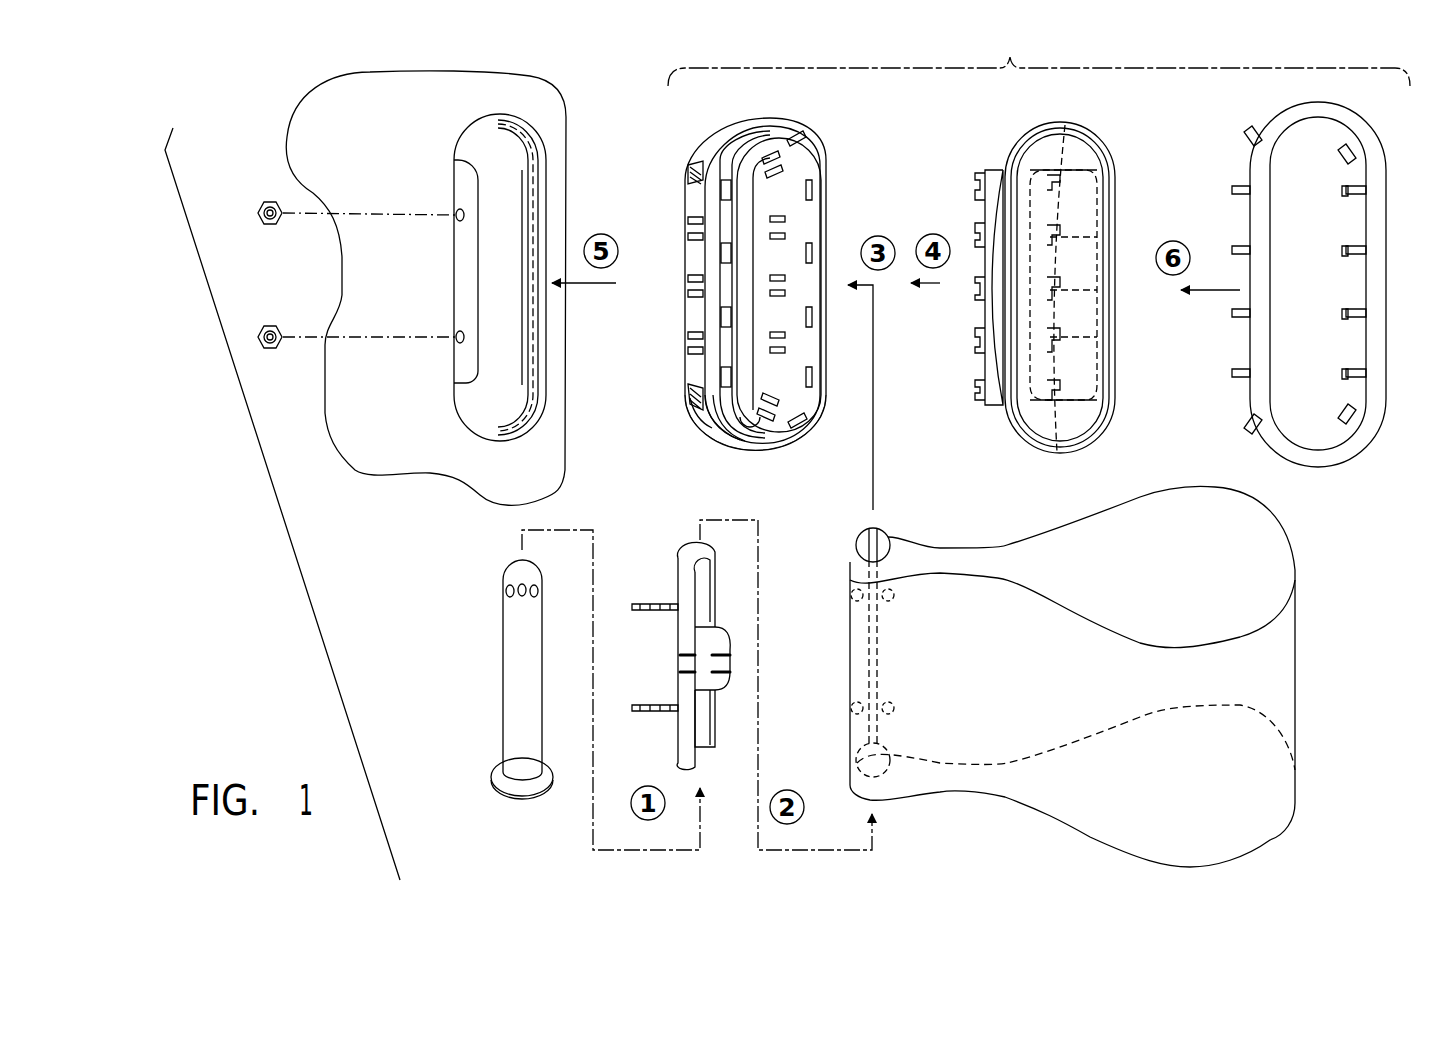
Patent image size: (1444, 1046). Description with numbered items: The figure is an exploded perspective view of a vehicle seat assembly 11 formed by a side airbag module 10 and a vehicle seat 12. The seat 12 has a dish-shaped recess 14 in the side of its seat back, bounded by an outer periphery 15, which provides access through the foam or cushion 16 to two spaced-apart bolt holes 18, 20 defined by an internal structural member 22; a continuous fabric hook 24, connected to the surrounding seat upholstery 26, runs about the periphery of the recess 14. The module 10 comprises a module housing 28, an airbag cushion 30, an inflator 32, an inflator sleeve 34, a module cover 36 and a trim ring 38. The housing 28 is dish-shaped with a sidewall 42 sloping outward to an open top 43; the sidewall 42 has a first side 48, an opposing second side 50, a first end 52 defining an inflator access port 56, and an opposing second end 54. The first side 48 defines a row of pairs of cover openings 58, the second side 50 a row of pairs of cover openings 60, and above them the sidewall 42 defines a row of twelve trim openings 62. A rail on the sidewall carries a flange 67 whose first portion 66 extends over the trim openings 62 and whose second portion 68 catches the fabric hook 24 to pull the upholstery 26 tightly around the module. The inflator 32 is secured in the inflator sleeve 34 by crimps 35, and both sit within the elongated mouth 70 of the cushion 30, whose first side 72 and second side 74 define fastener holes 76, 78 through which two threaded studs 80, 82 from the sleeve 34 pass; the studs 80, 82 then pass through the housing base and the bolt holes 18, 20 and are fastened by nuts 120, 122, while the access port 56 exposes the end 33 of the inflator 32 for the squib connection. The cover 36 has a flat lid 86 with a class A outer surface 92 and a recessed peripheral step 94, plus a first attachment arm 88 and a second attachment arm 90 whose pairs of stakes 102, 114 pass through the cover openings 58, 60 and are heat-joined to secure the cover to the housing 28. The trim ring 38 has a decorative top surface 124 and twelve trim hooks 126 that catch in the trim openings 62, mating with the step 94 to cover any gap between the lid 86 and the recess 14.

The side airbag module 10 is at (1039, 55).
The vehicle seat assembly 11 is at (288, 538).
The vehicle seat 12 is at (502, 72).
The dish-shaped recess 14 is at (538, 138).
The outer periphery of the recess 15 is at (545, 167).
The foam or cushion 16 is at (497, 140).
The bolt hole 18 is at (456, 220).
The bolt hole 20 is at (456, 340).
The internal structural member 22 is at (458, 378).
The fabric hook 24 is at (523, 346).
The seat upholstery 26 is at (542, 368).
The module housing 28 is at (826, 124).
The airbag cushion 30 is at (1010, 535).
The inflator 32 is at (499, 638).
The end of the inflator 33 is at (523, 794).
The inflator sleeve 34 is at (673, 585).
The crimps 35 is at (727, 653).
The module cover 36 is at (1122, 424).
The trim ring 38 is at (1381, 414).
The sidewall 42 is at (829, 143).
The open top 43 is at (818, 433).
The first side of the sidewall 48 is at (705, 313).
The second side of the sidewall 50 is at (827, 307).
The first end of the sidewall 52 is at (783, 448).
The second end of the sidewall 54 is at (778, 122).
The inflator access port 56 is at (762, 445).
The cover openings 58 is at (688, 170).
The cover openings 60 is at (783, 172).
The trim openings 62 is at (718, 142).
The first portion of the flange 66 is at (717, 427).
The flange 67 is at (722, 440).
The second portion of the flange 68 is at (703, 410).
The mouth of the airbag cushion 70 is at (900, 535).
The first side of the mouth 72 is at (862, 535).
The second side of the mouth 74 is at (888, 535).
The fastener holes 76 is at (851, 597).
The fastener holes 78 is at (894, 598).
The threaded stud 80 is at (653, 605).
The threaded stud 82 is at (655, 704).
The lid 86 is at (1093, 160).
The first attachment arm 88 is at (997, 405).
The second attachment arm 90 is at (1080, 403).
The outer surface of the lid 92 is at (1077, 127).
The peripheral step 94 is at (1037, 123).
The stakes 102 is at (975, 176).
The stakes 114 is at (1058, 116).
The nut 120 is at (257, 213).
The nut 122 is at (257, 337).
The decorative top surface 124 is at (1383, 258).
The trim hooks 126 is at (1240, 140).